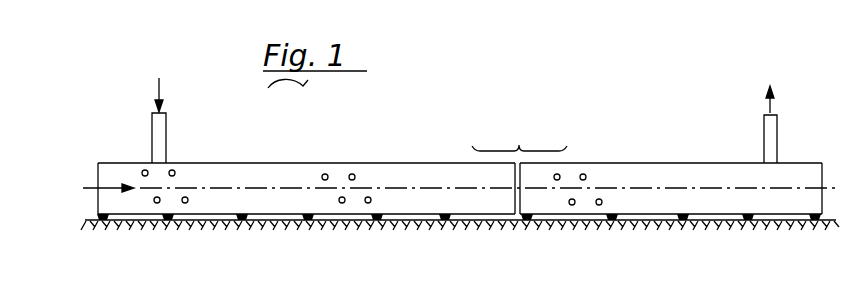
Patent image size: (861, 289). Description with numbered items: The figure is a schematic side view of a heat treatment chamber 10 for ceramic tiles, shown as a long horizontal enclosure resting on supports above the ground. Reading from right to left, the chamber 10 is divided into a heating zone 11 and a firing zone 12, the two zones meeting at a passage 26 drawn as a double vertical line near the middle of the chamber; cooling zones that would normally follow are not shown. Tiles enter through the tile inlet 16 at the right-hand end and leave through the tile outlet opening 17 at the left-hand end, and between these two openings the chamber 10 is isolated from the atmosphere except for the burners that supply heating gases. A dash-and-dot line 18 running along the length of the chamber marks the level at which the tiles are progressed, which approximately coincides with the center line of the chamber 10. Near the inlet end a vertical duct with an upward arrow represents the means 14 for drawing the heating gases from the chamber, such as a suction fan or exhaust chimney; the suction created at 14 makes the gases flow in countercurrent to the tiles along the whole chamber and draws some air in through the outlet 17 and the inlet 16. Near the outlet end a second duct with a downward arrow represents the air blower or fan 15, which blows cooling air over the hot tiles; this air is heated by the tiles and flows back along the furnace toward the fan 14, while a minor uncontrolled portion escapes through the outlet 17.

The heat treatment chamber 10 is at (519, 143).
The heating zone 11 is at (609, 159).
The firing zone 12 is at (282, 161).
The means for drawing the heating gases 14 is at (781, 128).
The air blower or fan 15 is at (164, 147).
The tile inlet 16 is at (823, 172).
The tile outlet opening 17 is at (97, 213).
The dash-and-dot line 18 is at (270, 189).
The passage from the heating to the firing zone 26 is at (513, 199).